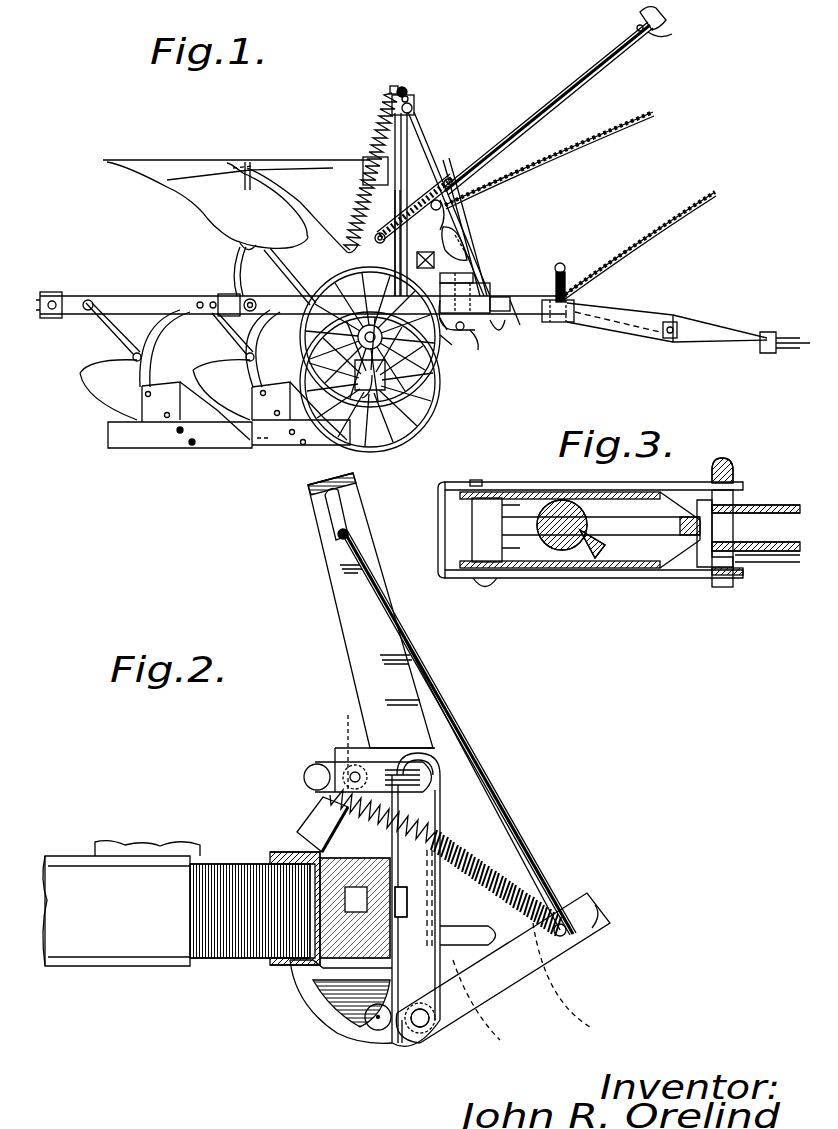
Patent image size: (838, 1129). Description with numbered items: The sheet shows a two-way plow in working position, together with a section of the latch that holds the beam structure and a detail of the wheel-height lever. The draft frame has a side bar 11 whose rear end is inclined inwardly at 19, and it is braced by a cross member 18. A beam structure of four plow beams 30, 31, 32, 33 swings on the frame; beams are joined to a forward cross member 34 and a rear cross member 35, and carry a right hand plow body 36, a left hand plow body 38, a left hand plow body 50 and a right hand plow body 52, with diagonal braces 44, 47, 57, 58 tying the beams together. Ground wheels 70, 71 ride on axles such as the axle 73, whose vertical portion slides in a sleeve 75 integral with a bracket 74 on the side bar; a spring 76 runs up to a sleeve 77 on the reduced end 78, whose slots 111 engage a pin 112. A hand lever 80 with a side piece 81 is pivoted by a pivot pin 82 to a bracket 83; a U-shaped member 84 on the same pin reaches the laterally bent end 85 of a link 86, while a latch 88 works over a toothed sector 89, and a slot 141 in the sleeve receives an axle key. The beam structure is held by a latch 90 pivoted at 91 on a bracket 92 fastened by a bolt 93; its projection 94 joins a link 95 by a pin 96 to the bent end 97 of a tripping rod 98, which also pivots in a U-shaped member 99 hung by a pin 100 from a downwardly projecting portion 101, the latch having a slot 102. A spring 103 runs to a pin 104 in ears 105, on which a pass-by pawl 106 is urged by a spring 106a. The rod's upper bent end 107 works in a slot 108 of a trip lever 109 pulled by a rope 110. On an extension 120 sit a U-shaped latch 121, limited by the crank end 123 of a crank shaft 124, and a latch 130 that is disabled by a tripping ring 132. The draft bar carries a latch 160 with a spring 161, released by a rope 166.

In FIG. 1, the side bar 11 is at (525, 300).
In FIG. 2, the cross member 18 is at (378, 861).
In FIG. 2, the inwardly inclined rear end of side bar 19 is at (240, 950).
In FIG. 1, the plow beam 30 is at (355, 262).
In FIG. 1, the plow beam 31 is at (236, 272).
In FIG. 1, the plow beam 32 is at (270, 322).
In FIG. 1, the plow beam 33 is at (126, 296).
In FIG. 2, the cross member 34 is at (275, 852).
In FIG. 1, the cross member 35 is at (48, 292).
In FIG. 1, the right hand plow body 36 is at (313, 187).
In FIG. 1, the left hand plow body 38 is at (283, 437).
In FIG. 1, the diagonal brace 44 is at (392, 226).
In FIG. 1, the diagonal brace 47 is at (232, 330).
In FIG. 1, the left hand plow body 50 is at (125, 432).
In FIG. 1, the right hand plow body 52 is at (208, 190).
In FIG. 1, the diagonal brace 57 is at (285, 250).
In FIG. 1, the diagonal brace 58 is at (100, 323).
In FIG. 1, the ground wheel 70 is at (423, 422).
In FIG. 1, the ground wheel 71 is at (445, 335).
In FIG. 1, the axle 73 is at (410, 146).
In FIG. 3, the axle 73 is at (560, 500).
In FIG. 1, the bracket 74 is at (445, 320).
In FIG. 2, the bracket 74 is at (100, 966).
In FIG. 1, the sleeve 75 is at (370, 161).
In FIG. 3, the sleeve 75 is at (576, 512).
In FIG. 1, the spring 76 is at (380, 126).
In FIG. 1, the sleeve 77 is at (418, 106).
In FIG. 1, the reduced end of axle 78 is at (410, 90).
In FIG. 1, the hand lever 80 is at (540, 90).
In FIG. 3, the hand lever 80 is at (790, 499).
In FIG. 3, the side piece 81 is at (772, 562).
In FIG. 1, the pivot pin 82 is at (384, 231).
In FIG. 3, the pivot pin 82 is at (488, 590).
In FIG. 3, the bracket 83 is at (478, 540).
In FIG. 1, the U-shaped member 84 is at (423, 260).
In FIG. 3, the U-shaped member 84 is at (660, 578).
In FIG. 1, the laterally bent end of link 85 is at (442, 207).
In FIG. 3, the laterally bent end of link 85 is at (740, 492).
In FIG. 1, the link 86 is at (425, 146).
In FIG. 3, the link 86 is at (732, 461).
In FIG. 1, the latch 88 is at (455, 185).
In FIG. 3, the latch 88 is at (720, 578).
In FIG. 1, the toothed sector 89 is at (468, 233).
In FIG. 3, the toothed sector 89 is at (660, 517).
In FIG. 1, the latch 90 is at (455, 331).
In FIG. 2, the latch 90 is at (340, 1037).
In FIG. 2, the pivot 91 is at (440, 811).
In FIG. 1, the bracket 92 is at (496, 297).
In FIG. 2, the bracket 92 is at (433, 807).
In FIG. 2, the bolt 93 is at (350, 887).
In FIG. 2, the projection 94 is at (487, 916).
In FIG. 2, the link 95 is at (590, 1027).
In FIG. 2, the pin 96 is at (486, 1005).
In FIG. 2, the laterally bent end of tripping rod 97 is at (557, 943).
In FIG. 1, the tripping rod 98 is at (505, 320).
In FIG. 2, the tripping rod 98 is at (535, 829).
In FIG. 1, the U-shaped member 99 is at (505, 340).
In FIG. 2, the U-shaped member 99 is at (605, 916).
In FIG. 2, the pin 100 is at (425, 1023).
In FIG. 2, the downwardly projecting portion 101 is at (400, 1050).
In FIG. 2, the slot 102 is at (375, 1030).
In FIG. 2, the spring 103 is at (520, 886).
In FIG. 2, the pin 104 is at (376, 747).
In FIG. 2, the ears 105 is at (336, 761).
In FIG. 2, the pass-by pawl 106 is at (318, 801).
In FIG. 2, the spring 106a is at (322, 832).
In FIG. 2, the laterally bent end of tripping rod 107 is at (350, 533).
In FIG. 1, the slot 108 is at (510, 241).
In FIG. 2, the slot 108 is at (360, 494).
In FIG. 1, the trip lever 109 is at (462, 201).
In FIG. 2, the trip lever 109 is at (320, 518).
In FIG. 1, the rope 110 is at (646, 125).
In FIG. 1, the slots 111 is at (412, 97).
In FIG. 1, the pin 112 is at (395, 88).
In FIG. 2, the extension of bracket 120 is at (147, 830).
In FIG. 1, the U-shaped latch 121 is at (470, 273).
In FIG. 2, the crank end 123 is at (304, 771).
In FIG. 1, the crank shaft 124 is at (552, 275).
In FIG. 2, the crank shaft 124 is at (420, 790).
In FIG. 1, the latch 130 is at (468, 257).
In FIG. 1, the tripping ring 132 is at (88, 299).
In FIG. 3, the slot 141 is at (595, 558).
In FIG. 1, the latch 160 is at (688, 313).
In FIG. 1, the spring 161 is at (560, 258).
In FIG. 1, the rope 166 is at (712, 200).